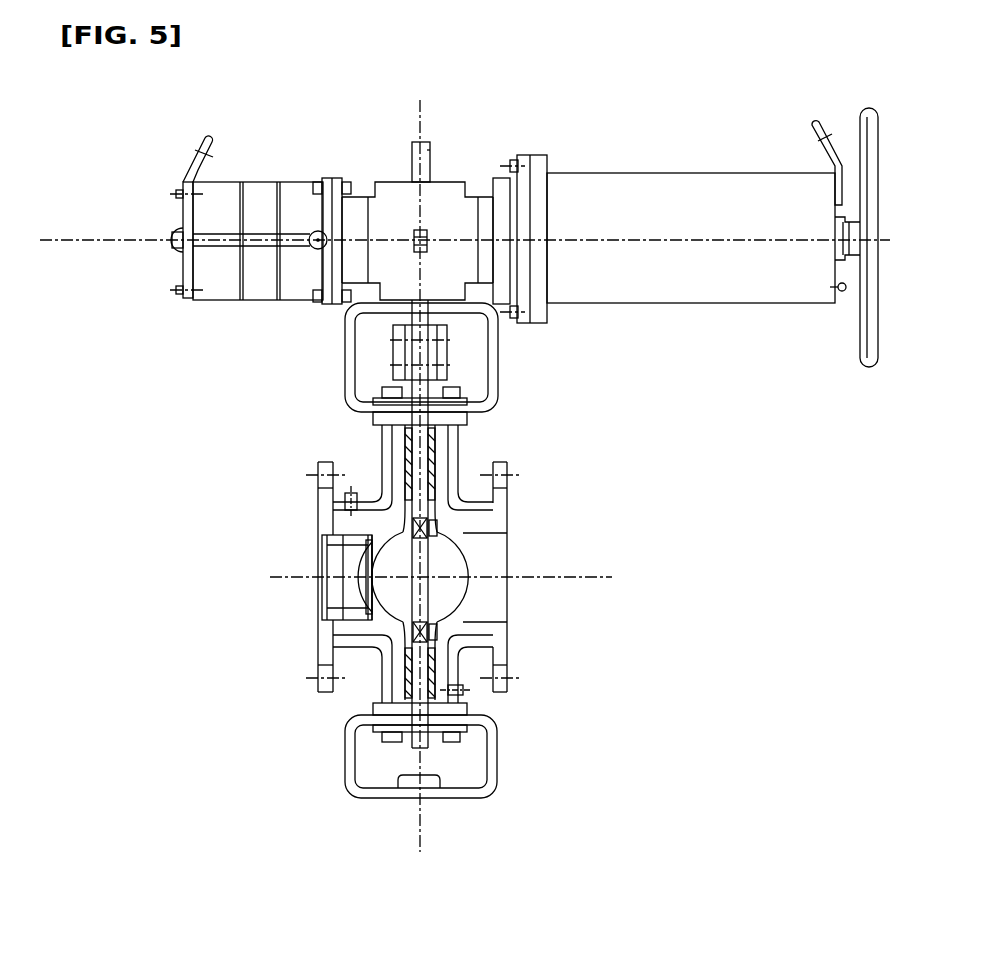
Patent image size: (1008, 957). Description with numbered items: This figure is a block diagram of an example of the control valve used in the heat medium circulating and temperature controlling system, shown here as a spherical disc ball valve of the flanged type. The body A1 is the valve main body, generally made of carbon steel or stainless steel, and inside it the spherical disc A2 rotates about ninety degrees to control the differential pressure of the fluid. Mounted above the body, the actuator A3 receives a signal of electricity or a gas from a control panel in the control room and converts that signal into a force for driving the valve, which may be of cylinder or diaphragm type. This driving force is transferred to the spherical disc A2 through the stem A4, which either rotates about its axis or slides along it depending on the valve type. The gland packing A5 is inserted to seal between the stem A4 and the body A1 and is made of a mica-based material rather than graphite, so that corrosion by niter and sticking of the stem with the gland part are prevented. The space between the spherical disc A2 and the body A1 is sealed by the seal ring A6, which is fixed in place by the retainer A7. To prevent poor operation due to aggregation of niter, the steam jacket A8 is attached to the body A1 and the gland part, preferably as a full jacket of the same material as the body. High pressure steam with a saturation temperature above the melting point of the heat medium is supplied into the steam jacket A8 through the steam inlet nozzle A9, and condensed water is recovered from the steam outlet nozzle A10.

The body A1 is at (510, 603).
The spherical disc A2 is at (357, 562).
The actuator A3 is at (502, 173).
The stem A4 is at (407, 387).
The gland packing A5 is at (433, 436).
The seal ring A6 is at (368, 610).
The retainer A7 is at (328, 615).
The steam jacket A8 is at (378, 453).
The steam inlet nozzle A9 is at (347, 493).
The steam outlet nozzle A10 is at (463, 692).